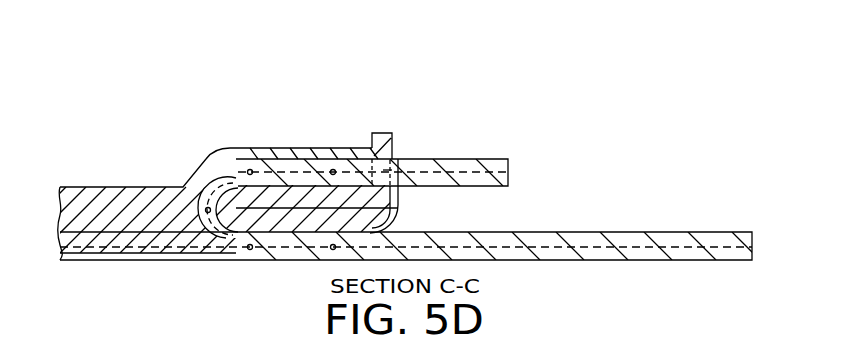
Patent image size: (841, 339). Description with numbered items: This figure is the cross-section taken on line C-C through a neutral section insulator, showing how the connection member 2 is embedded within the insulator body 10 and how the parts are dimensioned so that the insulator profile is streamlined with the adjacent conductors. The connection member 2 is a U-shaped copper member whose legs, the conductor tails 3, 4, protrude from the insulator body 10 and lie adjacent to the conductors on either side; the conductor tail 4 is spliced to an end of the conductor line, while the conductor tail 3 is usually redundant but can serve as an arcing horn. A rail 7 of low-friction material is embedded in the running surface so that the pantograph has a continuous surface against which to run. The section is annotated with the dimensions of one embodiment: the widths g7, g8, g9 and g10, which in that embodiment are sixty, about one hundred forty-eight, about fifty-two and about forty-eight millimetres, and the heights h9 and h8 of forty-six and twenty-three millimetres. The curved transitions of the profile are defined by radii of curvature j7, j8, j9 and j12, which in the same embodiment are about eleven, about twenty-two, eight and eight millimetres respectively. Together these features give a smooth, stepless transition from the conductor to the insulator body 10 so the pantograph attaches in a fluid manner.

The connection member 2 is at (400, 150).
The conductor tail 3 is at (472, 159).
The conductor tail 4 is at (698, 233).
The rail 7 is at (399, 200).
The insulator body 10 is at (96, 187).
The radius of curvature j7 is at (248, 215).
The radius of curvature j8 is at (201, 156).
The radius of curvature j9 is at (181, 180).
The radius of curvature j12 is at (366, 143).
The dimension g7 is at (393, 133).
The dimension g8 is at (752, 232).
The dimension g9 is at (252, 208).
The dimension g10 is at (508, 159).
The dimension h9 is at (508, 159).
The dimension h8 is at (398, 209).